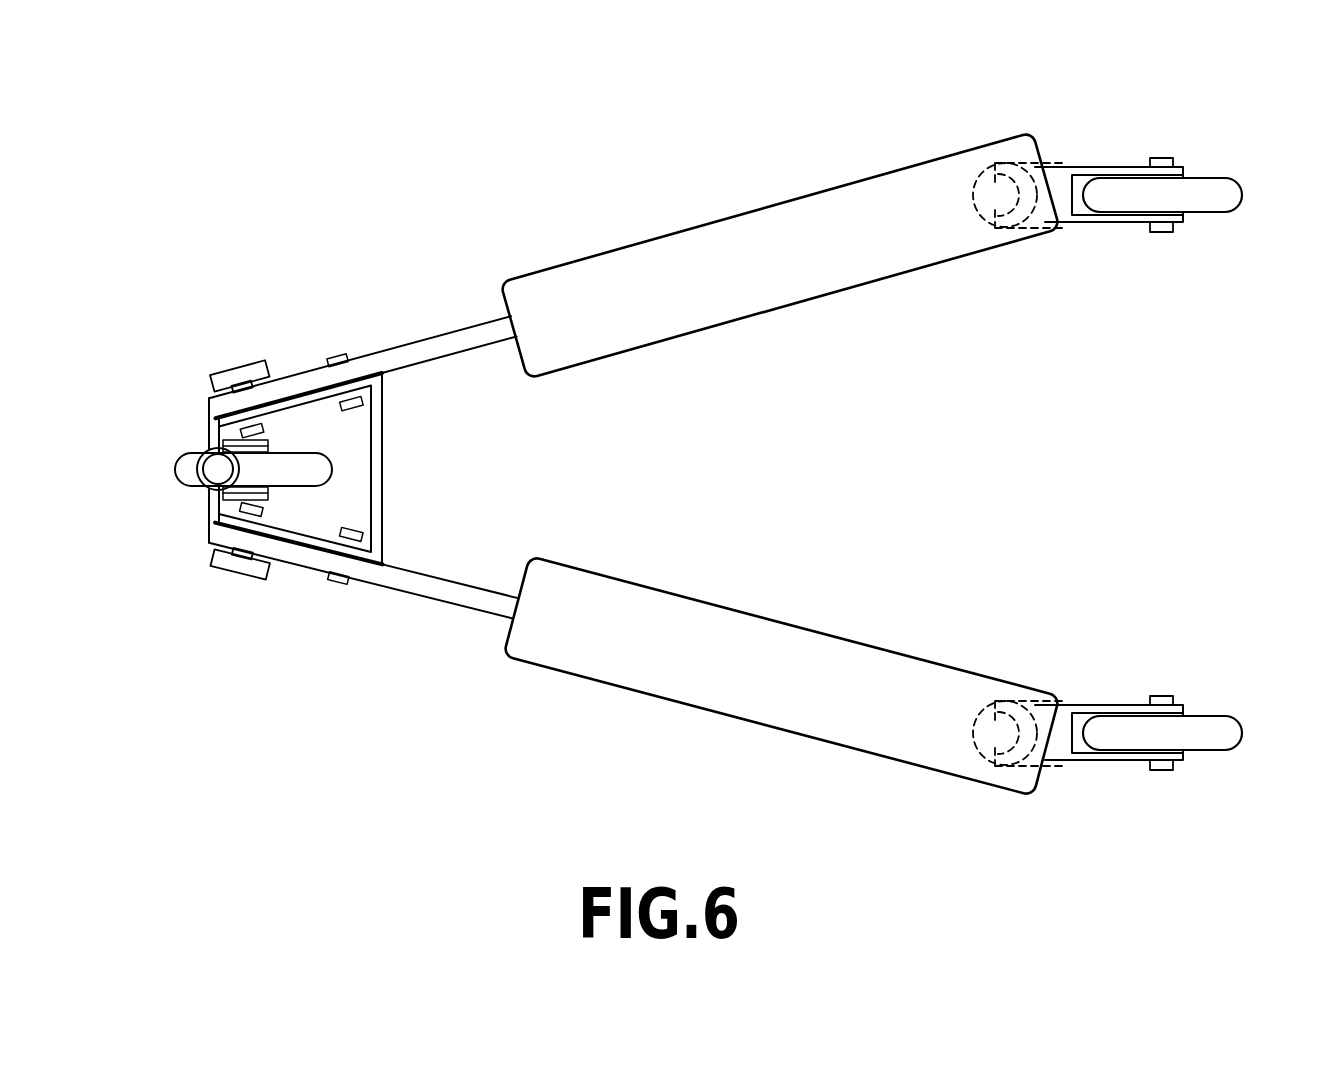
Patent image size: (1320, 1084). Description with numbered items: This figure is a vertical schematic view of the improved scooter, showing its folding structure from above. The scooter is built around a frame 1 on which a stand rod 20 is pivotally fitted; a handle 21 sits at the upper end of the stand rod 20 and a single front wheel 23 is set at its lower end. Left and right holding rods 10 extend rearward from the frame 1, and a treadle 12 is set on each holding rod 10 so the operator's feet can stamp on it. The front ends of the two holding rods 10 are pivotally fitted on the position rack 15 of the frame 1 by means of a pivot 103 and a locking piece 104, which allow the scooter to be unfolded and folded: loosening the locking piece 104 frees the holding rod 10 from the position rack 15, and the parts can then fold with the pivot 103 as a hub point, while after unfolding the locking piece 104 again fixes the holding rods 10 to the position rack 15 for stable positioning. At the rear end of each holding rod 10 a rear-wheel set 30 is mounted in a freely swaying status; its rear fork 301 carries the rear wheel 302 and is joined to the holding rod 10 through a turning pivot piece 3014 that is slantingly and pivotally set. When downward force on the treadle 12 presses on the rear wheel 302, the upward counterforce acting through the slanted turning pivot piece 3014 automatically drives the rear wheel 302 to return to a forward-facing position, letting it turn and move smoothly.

The frame 1 is at (208, 488).
The holding rod 10 is at (455, 342).
The treadle 12 is at (671, 250).
The position rack 15 is at (390, 470).
The stand rod 20 is at (206, 454).
The handle 21 is at (218, 416).
The front wheel 23 is at (190, 471).
The rear-wheel set 30 is at (1112, 262).
The rear fork 301 is at (1103, 165).
The rear wheel 302 is at (1190, 190).
The turning pivot piece 3014 is at (1040, 160).
The pivot 103 is at (337, 354).
The locking piece 104 is at (236, 368).